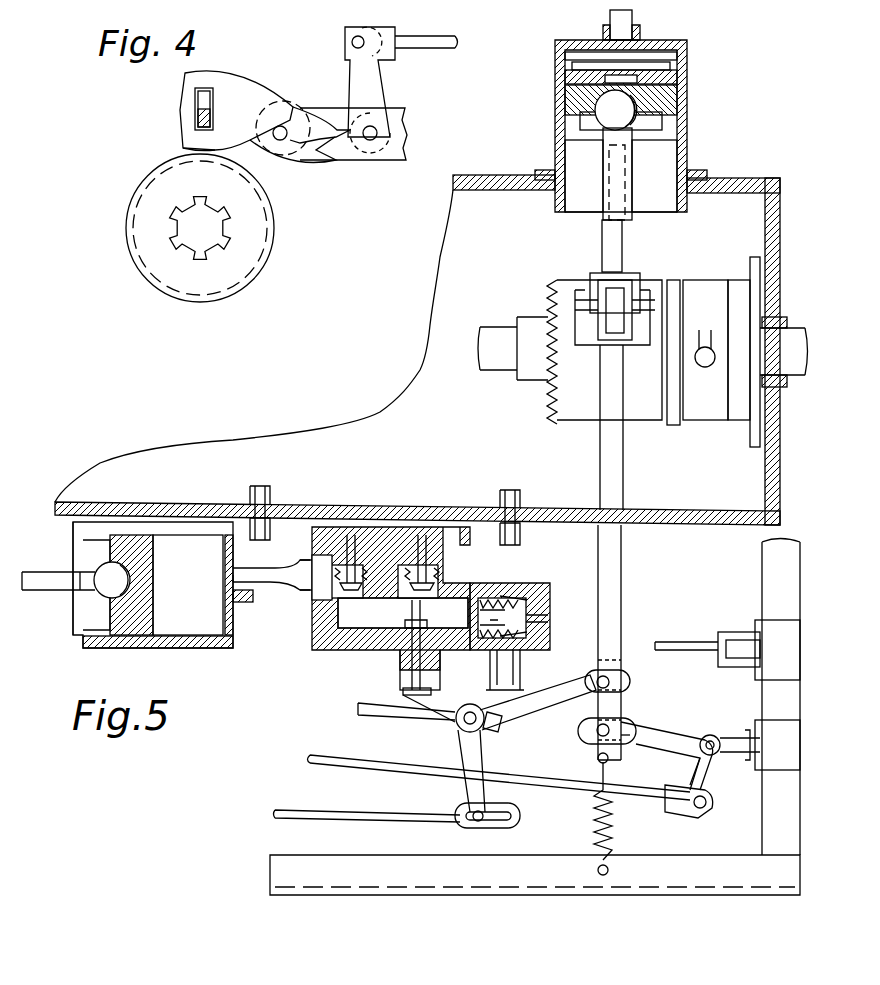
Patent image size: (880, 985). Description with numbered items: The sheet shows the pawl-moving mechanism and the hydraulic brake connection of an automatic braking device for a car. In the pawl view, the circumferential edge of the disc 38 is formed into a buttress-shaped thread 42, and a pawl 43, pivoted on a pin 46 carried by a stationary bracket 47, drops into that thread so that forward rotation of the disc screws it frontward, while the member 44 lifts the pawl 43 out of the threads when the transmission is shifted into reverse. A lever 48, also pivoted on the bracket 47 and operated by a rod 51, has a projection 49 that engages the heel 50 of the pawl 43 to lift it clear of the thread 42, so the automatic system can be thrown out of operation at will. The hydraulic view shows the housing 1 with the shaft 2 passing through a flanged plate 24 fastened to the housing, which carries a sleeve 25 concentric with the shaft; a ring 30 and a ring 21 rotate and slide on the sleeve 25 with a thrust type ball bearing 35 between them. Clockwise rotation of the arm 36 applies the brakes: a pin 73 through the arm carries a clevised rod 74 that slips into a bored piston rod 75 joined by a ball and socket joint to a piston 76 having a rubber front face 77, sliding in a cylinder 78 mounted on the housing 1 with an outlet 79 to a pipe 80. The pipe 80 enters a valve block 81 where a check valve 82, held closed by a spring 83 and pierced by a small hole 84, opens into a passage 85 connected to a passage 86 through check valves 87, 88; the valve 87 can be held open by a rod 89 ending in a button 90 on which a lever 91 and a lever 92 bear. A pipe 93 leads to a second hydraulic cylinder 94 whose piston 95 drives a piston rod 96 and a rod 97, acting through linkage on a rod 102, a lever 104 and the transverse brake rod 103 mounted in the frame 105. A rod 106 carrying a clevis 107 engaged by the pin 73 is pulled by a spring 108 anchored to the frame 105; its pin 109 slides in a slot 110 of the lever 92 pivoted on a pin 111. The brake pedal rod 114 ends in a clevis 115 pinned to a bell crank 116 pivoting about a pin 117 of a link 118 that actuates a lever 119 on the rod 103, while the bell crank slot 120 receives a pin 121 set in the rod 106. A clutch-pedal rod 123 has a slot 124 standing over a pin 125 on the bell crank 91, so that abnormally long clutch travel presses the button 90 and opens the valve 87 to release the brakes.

In FIG. 5, the housing 1 is at (780, 225).
In FIG. 5, the shaft 2 is at (492, 372).
In FIG. 5, the ring 21 is at (557, 368).
In FIG. 5, the flanged plate 24 is at (740, 425).
In FIG. 5, the sleeve 25 is at (530, 382).
In FIG. 5, the ring 30 is at (690, 425).
In FIG. 5, the thrust type ball bearing 35 is at (685, 278).
In FIG. 5, the arm 36 is at (605, 318).
In FIG. 4, the disc 38 is at (248, 230).
In FIG. 4, the buttress-shaped thread 42 is at (130, 207).
In FIG. 4, the pawl 43 is at (178, 120).
In FIG. 4, the member 44 is at (213, 118).
In FIG. 4, the pin 46 is at (283, 128).
In FIG. 4, the stationary bracket 47 is at (355, 162).
In FIG. 4, the lever 48 is at (385, 95).
In FIG. 4, the projection 49 is at (322, 135).
In FIG. 4, the heel 50 is at (314, 145).
In FIG. 4, the rod 51 is at (442, 50).
In FIG. 5, the pin 73 is at (560, 305).
In FIG. 5, the clevised rod 74 is at (623, 252).
In FIG. 5, the piston rod 75 is at (632, 185).
In FIG. 5, the piston 76 is at (665, 102).
In FIG. 5, the front face 77 is at (680, 78).
In FIG. 5, the cylinder 78 is at (688, 135).
In FIG. 5, the outlet 79 is at (625, 45).
In FIG. 5, the pipe 80 is at (633, 20).
In FIG. 5, the valve block 81 is at (335, 650).
In FIG. 5, the check valve 82 is at (427, 673).
In FIG. 5, the spring 83 is at (520, 600).
In FIG. 5, the hole 84 is at (483, 602).
In FIG. 5, the passage 85 is at (390, 620).
In FIG. 5, the passage 86 is at (305, 595).
In FIG. 5, the check valve 87 is at (420, 592).
In FIG. 5, the check valve 88 is at (339, 562).
In FIG. 5, the rod 89 is at (422, 620).
In FIG. 5, the button 90 is at (405, 692).
In FIG. 5, the lever 91 is at (403, 698).
In FIG. 5, the lever 92 is at (415, 714).
In FIG. 5, the pipe 93 is at (265, 598).
In FIG. 5, the hydraulic cylinder 94 is at (210, 650).
In FIG. 5, the piston 95 is at (75, 638).
In FIG. 5, the piston rod 96 is at (66, 592).
In FIG. 5, the rod 97 is at (40, 592).
In FIG. 5, the rod 102 is at (676, 640).
In FIG. 5, the transverse brake rod 103 is at (762, 570).
In FIG. 5, the lever 104 is at (745, 650).
In FIG. 5, the frame 105 is at (572, 898).
In FIG. 5, the rod 106 is at (624, 622).
In FIG. 5, the clevis 107 is at (583, 300).
In FIG. 5, the spring 108 is at (614, 836).
In FIG. 5, the pin 109 is at (600, 680).
In FIG. 5, the slot 110 is at (630, 681).
In FIG. 5, the pin 111 is at (462, 720).
In FIG. 5, the rod 114 is at (340, 764).
In FIG. 5, the clevis 115 is at (690, 818).
In FIG. 5, the bell crank 116 is at (650, 725).
In FIG. 5, the pin 117 is at (716, 738).
In FIG. 5, the link 118 is at (718, 765).
In FIG. 5, the lever 119 is at (750, 745).
In FIG. 5, the slot 120 is at (628, 738).
In FIG. 5, the pin 121 is at (590, 742).
In FIG. 5, the rod 123 is at (338, 818).
In FIG. 5, the slot 124 is at (505, 820).
In FIG. 5, the pin 125 is at (476, 822).